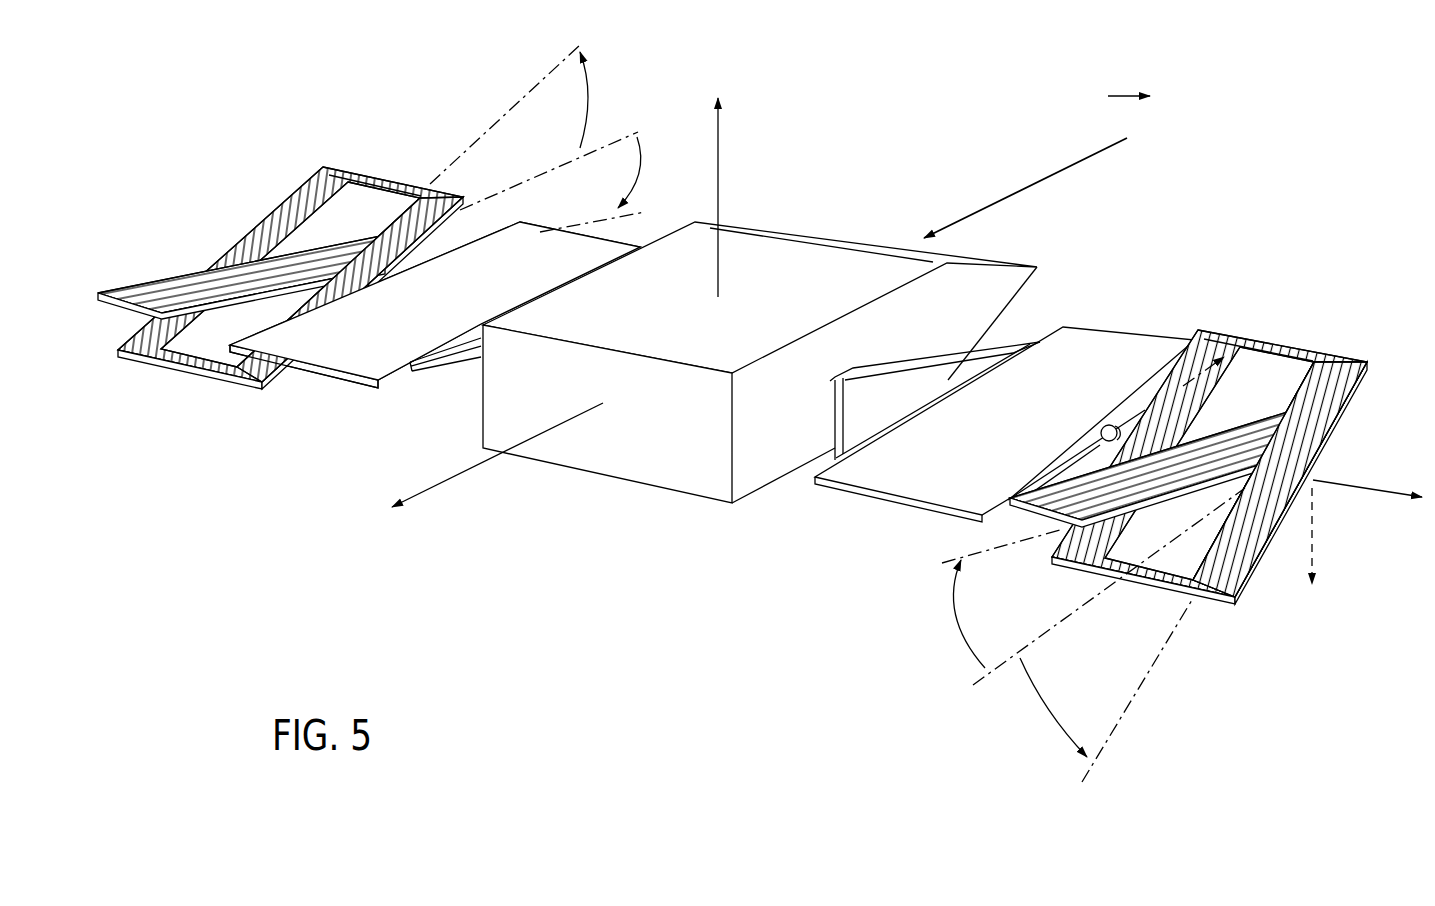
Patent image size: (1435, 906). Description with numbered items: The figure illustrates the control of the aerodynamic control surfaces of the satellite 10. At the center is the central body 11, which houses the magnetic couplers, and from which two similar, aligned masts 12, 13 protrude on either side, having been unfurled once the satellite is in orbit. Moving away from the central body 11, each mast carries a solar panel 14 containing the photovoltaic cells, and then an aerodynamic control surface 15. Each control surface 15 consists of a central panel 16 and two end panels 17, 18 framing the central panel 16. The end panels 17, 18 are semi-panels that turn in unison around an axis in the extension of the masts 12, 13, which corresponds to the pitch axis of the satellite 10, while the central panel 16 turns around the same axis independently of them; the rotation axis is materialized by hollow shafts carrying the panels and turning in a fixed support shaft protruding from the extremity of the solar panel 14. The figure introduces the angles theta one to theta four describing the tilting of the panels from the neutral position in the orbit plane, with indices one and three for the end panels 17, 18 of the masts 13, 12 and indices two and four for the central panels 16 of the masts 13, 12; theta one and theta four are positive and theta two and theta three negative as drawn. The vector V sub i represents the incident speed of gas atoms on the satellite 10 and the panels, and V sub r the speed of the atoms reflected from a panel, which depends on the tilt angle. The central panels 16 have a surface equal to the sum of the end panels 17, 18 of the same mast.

The satellite 10 is at (900, 349).
The central body 11 is at (617, 468).
The mast 12 is at (293, 442).
The mast 13 is at (1130, 292).
The solar panel 14 is at (375, 381).
The aerodynamic control surface 15 is at (300, 177).
The central panel 16 is at (158, 284).
The end panel 17 is at (243, 380).
The end panel 18 is at (140, 357).